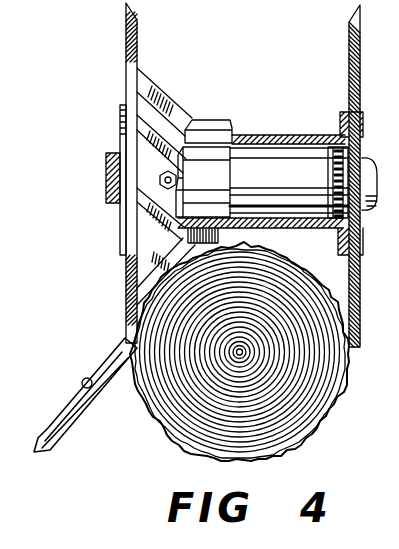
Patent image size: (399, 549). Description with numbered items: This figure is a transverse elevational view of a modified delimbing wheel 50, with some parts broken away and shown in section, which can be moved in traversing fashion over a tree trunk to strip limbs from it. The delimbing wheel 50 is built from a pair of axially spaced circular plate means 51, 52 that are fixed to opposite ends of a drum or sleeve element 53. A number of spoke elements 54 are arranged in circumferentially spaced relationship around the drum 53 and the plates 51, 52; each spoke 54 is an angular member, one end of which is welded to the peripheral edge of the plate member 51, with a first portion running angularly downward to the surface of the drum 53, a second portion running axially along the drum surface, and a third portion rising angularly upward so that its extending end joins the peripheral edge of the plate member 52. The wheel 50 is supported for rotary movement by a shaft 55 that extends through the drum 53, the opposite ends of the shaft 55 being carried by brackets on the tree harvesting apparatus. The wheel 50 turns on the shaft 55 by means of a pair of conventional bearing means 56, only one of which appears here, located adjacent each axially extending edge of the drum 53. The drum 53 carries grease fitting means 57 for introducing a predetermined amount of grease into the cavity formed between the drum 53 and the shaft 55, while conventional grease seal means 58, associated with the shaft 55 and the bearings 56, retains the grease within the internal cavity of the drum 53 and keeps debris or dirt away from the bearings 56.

The delimbing wheel 50 is at (206, 118).
The circular plate means 51 is at (126, 88).
The circular plate means 52 is at (349, 62).
The drum or sleeve element 53 is at (262, 136).
The spoke elements 54 is at (150, 87).
The shaft 55 is at (289, 180).
The bearing means 56 is at (334, 228).
The grease fitting means 57 is at (160, 186).
The grease seal means 58 is at (366, 145).